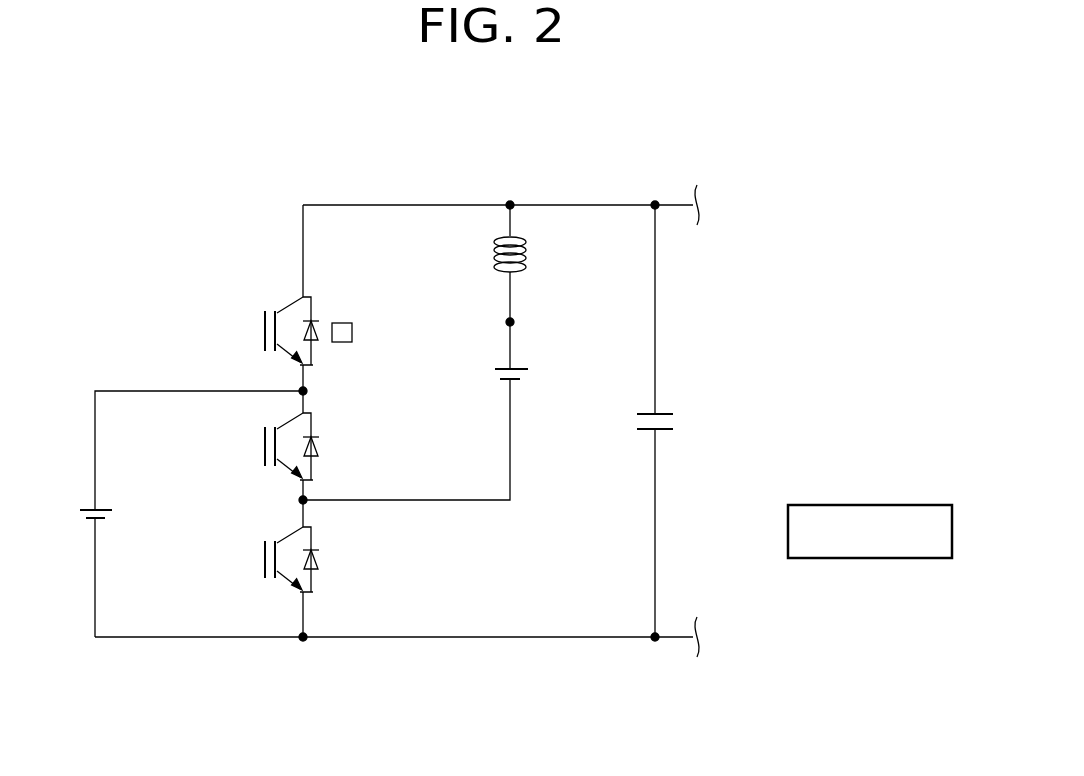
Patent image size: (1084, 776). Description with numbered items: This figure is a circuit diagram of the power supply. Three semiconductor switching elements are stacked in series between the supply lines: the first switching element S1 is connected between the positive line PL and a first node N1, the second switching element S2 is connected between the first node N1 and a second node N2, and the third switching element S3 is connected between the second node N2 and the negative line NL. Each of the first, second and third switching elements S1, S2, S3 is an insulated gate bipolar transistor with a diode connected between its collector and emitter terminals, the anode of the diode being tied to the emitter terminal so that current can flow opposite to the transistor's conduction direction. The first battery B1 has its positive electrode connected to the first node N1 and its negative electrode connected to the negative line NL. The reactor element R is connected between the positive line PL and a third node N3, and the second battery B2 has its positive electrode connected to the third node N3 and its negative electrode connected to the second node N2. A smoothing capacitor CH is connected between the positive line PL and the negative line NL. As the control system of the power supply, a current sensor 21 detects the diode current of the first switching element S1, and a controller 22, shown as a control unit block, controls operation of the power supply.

The current sensor 21 is at (352, 332).
The controller 22 is at (868, 505).
The first switching element S1 is at (275, 331).
The second switching element S2 is at (275, 446).
The third switching element S3 is at (275, 559).
The first battery B1 is at (174, 514).
The second battery B2 is at (415, 411).
The reactor element R is at (523, 263).
The smoothing capacitor CH is at (671, 421).
The first node N1 is at (306, 391).
The second node N2 is at (306, 503).
The third node N3 is at (514, 321).
The positive line PL is at (590, 205).
The negative line NL is at (590, 640).